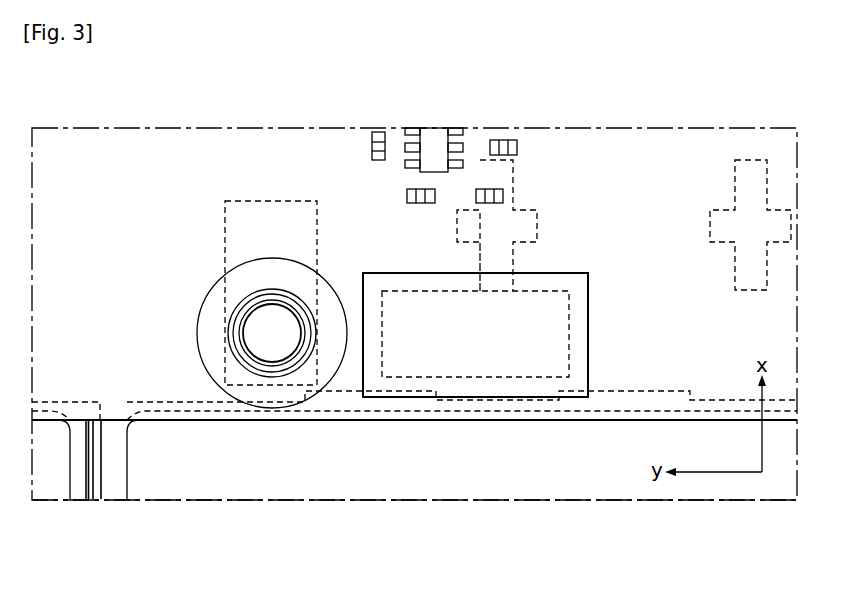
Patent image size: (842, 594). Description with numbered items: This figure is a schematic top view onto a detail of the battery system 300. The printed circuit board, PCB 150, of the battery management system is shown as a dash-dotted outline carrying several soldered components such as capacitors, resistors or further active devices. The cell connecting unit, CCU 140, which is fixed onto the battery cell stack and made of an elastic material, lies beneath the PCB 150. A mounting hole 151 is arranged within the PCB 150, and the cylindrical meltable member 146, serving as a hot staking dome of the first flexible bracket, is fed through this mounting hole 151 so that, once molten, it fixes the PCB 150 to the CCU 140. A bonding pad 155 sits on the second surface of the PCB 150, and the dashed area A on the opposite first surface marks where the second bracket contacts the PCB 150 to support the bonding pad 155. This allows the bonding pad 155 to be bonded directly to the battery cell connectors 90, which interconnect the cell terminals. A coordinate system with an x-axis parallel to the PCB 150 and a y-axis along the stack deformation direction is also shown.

The battery system 300 is at (113, 116).
The printed circuit board 150 is at (638, 153).
The meltable member 146 is at (270, 318).
The mounting hole 151 is at (228, 333).
The bonding pad 155 is at (582, 292).
The area A is at (553, 331).
The cell connecting unit 140 is at (115, 480).
The battery cell connector 90 is at (445, 482).